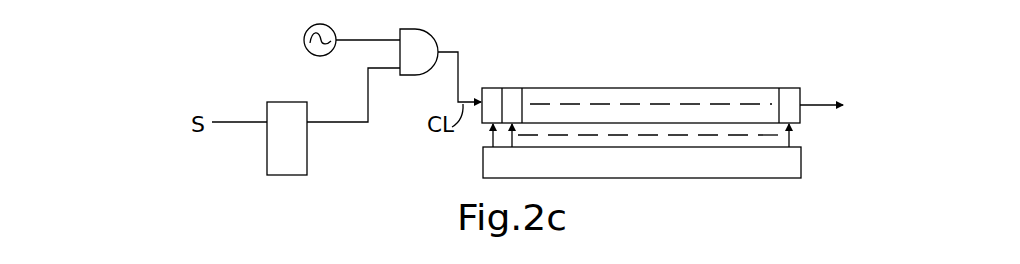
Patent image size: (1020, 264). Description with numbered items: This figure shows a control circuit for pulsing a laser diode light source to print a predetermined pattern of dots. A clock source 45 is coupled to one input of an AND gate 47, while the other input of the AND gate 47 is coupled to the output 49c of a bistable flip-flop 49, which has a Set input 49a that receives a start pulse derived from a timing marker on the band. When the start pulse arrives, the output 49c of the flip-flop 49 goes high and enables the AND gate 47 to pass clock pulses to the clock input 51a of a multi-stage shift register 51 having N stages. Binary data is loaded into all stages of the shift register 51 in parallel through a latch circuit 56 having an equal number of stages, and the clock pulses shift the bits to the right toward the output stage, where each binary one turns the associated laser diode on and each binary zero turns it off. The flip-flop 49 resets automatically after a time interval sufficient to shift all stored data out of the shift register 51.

The clock source 45 is at (306, 28).
The AND gate 47 is at (418, 28).
The bistable flip-flop 49 is at (267, 152).
The Set input 49a is at (238, 121).
The output of bistable flip-flop 49c is at (337, 121).
The multi-stage shift register 51 is at (689, 74).
The clock input 51a is at (462, 98).
The latch circuit 56 is at (802, 160).